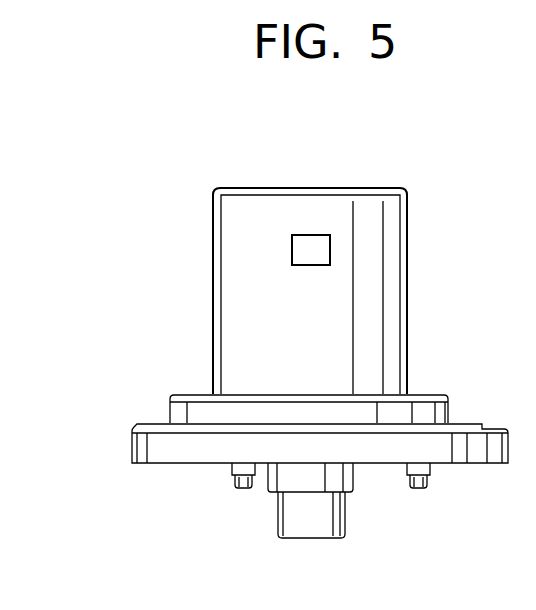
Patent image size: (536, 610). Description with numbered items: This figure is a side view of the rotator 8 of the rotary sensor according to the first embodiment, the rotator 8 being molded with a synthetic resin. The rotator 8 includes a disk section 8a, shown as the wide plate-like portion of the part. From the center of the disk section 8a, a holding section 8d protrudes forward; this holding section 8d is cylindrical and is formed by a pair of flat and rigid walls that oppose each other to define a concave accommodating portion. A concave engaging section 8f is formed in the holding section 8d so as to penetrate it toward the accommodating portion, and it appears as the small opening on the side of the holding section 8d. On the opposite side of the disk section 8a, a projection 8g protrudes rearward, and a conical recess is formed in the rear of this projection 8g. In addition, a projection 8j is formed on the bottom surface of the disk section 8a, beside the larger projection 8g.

The rotator 8 is at (407, 208).
The disk section 8a is at (132, 446).
The holding section 8d is at (362, 311).
The concave engaging section 8f is at (307, 255).
The projection 8g is at (305, 513).
The projection 8j is at (418, 492).